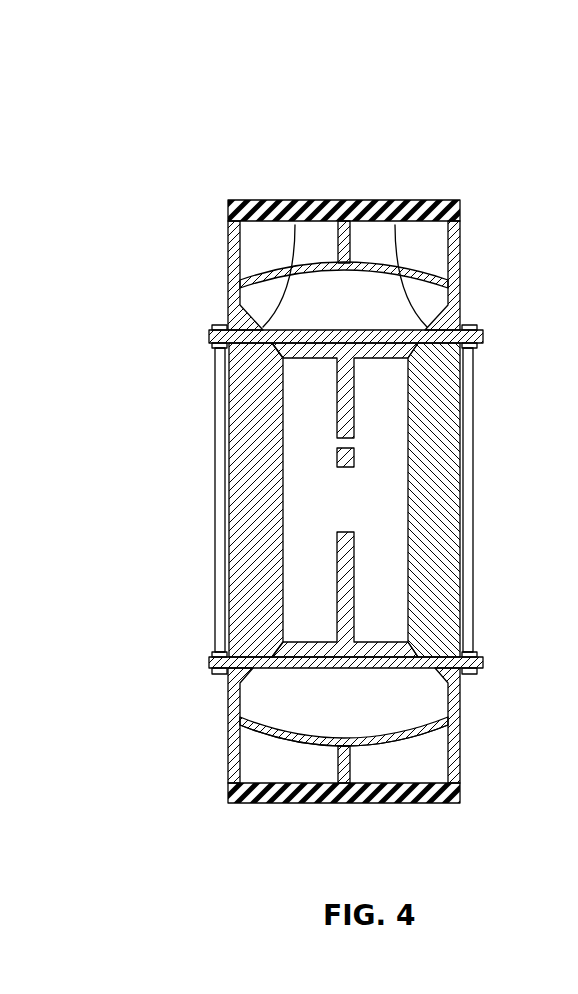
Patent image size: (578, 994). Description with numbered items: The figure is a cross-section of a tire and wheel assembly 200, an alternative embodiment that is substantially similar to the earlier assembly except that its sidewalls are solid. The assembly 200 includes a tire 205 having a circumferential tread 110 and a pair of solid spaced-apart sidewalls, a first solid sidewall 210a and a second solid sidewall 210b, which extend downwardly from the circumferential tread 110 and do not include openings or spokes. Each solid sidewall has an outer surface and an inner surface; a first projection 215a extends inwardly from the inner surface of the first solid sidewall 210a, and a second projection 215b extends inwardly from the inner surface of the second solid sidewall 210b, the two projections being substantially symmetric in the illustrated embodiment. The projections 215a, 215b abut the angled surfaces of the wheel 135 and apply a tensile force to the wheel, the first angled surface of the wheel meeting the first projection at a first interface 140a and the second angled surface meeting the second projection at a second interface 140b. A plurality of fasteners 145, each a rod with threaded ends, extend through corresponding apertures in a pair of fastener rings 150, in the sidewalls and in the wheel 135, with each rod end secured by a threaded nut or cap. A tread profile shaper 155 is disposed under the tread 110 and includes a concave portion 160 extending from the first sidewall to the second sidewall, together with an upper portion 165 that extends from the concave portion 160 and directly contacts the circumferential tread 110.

The tire and wheel assembly 200 is at (428, 58).
The tire 205 is at (210, 248).
The circumferential tread 110 is at (430, 200).
The first interface 140a is at (295, 225).
The second interface 140b is at (395, 225).
The second solid sidewall 210b is at (455, 267).
The first projection 215a is at (240, 385).
The second projection 215b is at (443, 383).
The fastener rings 150 is at (217, 543).
The wheel 135 is at (355, 602).
The fastener 145 is at (483, 659).
The concave portion 160 is at (417, 737).
The first solid sidewall 210a is at (240, 722).
The tread profile shaper 155 is at (271, 745).
The upper portion 165 is at (345, 765).